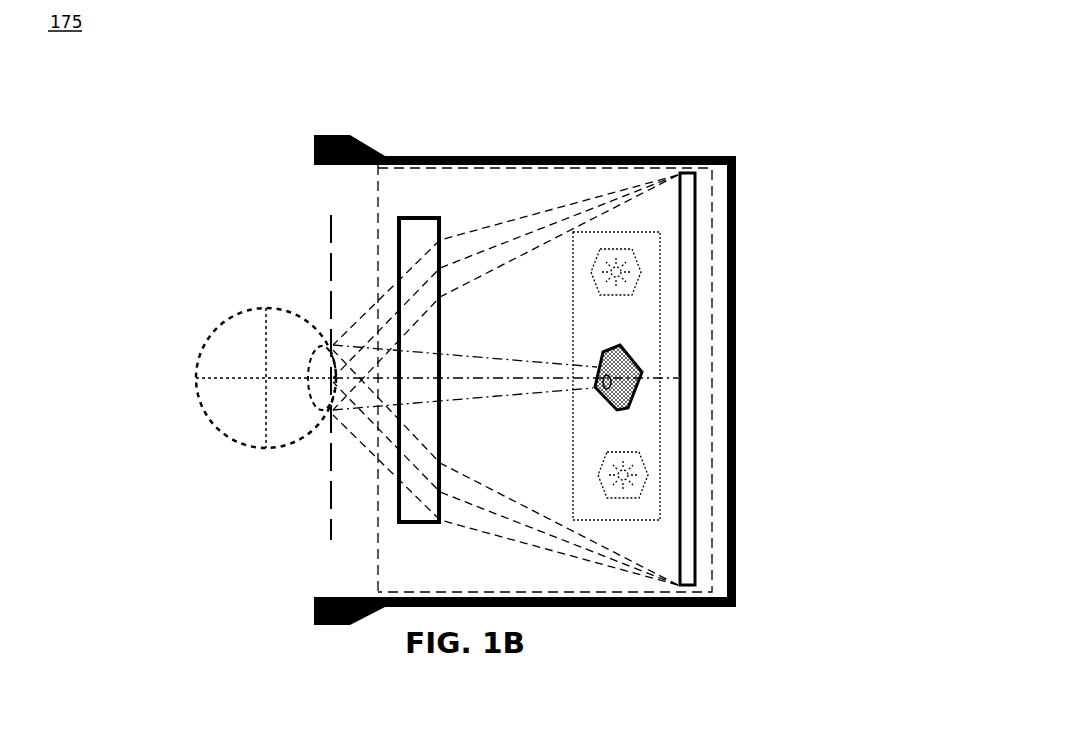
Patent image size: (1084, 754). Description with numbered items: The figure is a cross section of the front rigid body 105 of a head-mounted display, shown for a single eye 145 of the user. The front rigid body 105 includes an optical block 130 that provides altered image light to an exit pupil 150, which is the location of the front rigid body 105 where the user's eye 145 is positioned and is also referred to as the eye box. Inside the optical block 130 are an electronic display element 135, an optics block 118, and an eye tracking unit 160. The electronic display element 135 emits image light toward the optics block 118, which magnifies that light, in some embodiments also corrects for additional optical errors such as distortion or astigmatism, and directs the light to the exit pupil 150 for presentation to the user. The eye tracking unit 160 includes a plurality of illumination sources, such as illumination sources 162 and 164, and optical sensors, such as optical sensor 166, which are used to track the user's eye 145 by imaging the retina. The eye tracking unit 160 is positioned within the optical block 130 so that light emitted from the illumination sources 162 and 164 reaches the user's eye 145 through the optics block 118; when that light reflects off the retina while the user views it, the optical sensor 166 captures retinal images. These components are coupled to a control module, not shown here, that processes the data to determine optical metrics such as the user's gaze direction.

The front rigid body 105 is at (701, 147).
The optics block 118 is at (415, 218).
The optical block 130 is at (378, 489).
The electronic display element 135 is at (690, 231).
The eye 145 is at (265, 307).
The exit pupil 150 is at (325, 519).
The eye tracking unit 160 is at (659, 415).
The illumination source 162 is at (616, 284).
The illumination source 164 is at (623, 486).
The optical sensor 166 is at (618, 389).